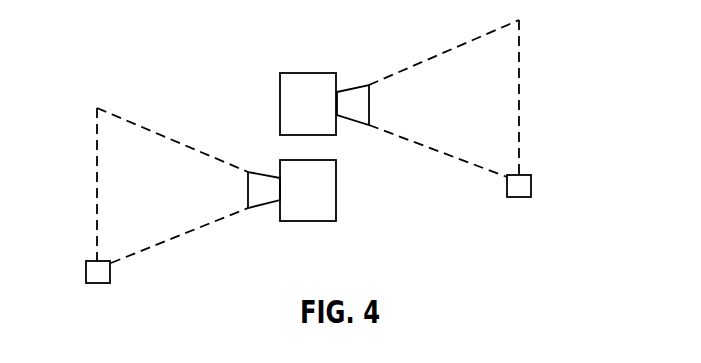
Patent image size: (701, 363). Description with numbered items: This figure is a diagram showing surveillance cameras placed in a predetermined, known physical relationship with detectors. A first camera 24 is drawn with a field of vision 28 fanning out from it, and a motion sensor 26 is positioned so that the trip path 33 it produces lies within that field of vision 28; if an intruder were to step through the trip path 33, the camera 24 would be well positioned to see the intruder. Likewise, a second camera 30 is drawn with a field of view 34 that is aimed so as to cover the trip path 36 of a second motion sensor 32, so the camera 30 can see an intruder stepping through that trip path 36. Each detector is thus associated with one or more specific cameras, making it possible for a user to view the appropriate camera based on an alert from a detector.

The camera 24 is at (280, 104).
The camera 30 is at (337, 190).
The field of vision 28 is at (434, 56).
The trip path 33 is at (519, 97).
The motion sensor 26 is at (531, 185).
The field of view 34 is at (142, 125).
The trip path 36 is at (97, 183).
The motion sensor 32 is at (86, 268).